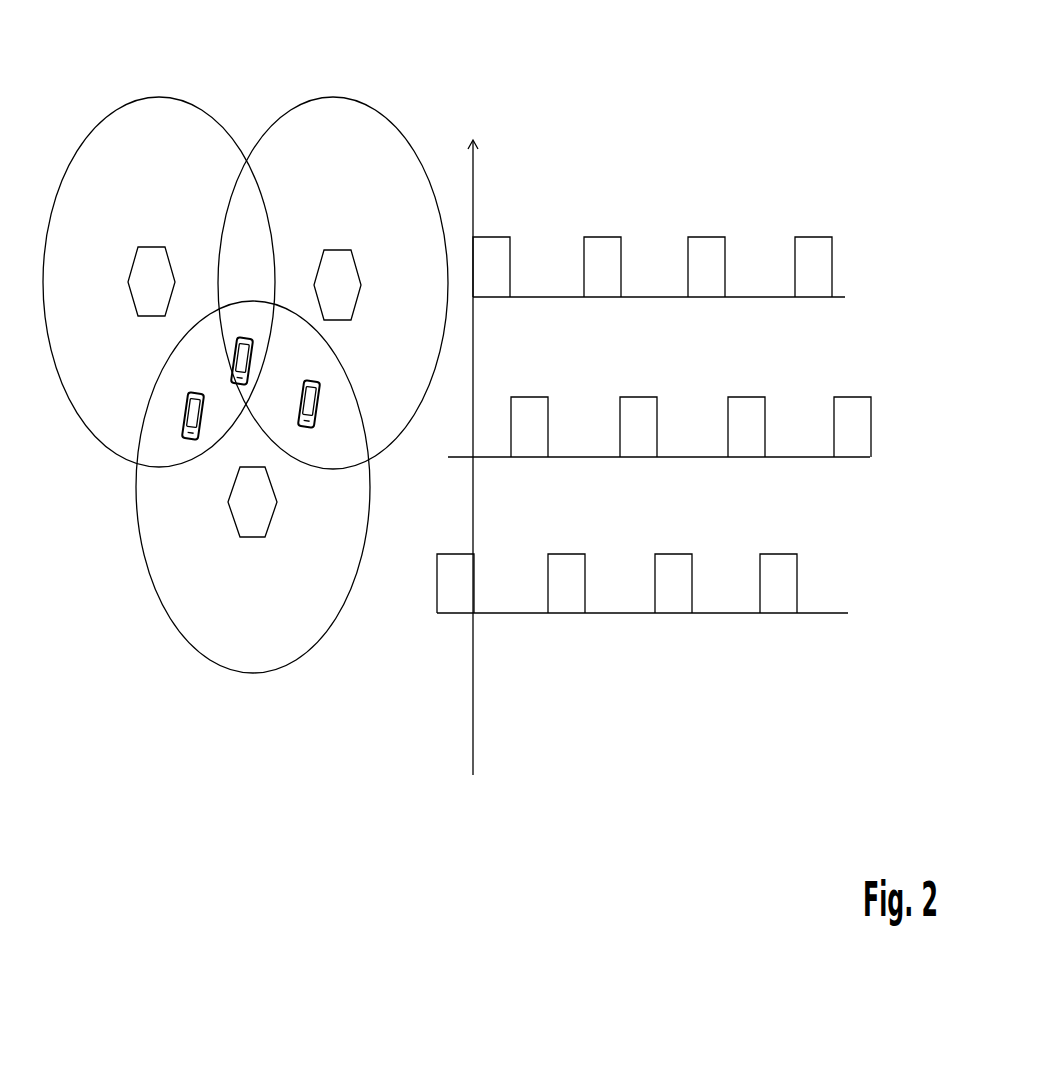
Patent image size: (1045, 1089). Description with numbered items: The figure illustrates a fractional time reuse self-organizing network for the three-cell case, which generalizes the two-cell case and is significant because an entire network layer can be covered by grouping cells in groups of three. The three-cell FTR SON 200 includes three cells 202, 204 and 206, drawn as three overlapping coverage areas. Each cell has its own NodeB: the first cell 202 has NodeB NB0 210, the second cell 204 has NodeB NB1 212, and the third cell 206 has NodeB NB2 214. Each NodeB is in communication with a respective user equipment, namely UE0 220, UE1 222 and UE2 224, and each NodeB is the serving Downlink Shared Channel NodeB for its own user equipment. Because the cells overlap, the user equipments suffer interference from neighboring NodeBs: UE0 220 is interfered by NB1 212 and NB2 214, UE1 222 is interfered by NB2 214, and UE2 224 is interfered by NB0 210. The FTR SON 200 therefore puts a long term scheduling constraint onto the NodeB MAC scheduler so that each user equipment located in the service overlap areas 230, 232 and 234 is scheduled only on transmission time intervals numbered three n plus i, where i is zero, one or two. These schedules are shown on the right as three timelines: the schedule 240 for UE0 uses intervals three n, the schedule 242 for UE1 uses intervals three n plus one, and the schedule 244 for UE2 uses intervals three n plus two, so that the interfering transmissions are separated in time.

The three-cell FTR SON 200 is at (275, 107).
The cell 202 is at (110, 125).
The cell 204 is at (373, 102).
The cell 206 is at (282, 670).
The NodeB NB0 210 is at (170, 262).
The NodeB NB1 212 is at (358, 270).
The NodeB NB2 214 is at (250, 537).
The user equipment UE0 220 is at (250, 340).
The user equipment UE1 222 is at (327, 398).
The user equipment UE2 224 is at (203, 422).
The service overlap area 230 is at (257, 267).
The service overlap area 232 is at (290, 434).
The service overlap area 234 is at (176, 454).
The TTI schedule for UE0 240 is at (548, 300).
The TTI schedule for UE1 242 is at (585, 458).
The TTI schedule for UE2 244 is at (620, 614).